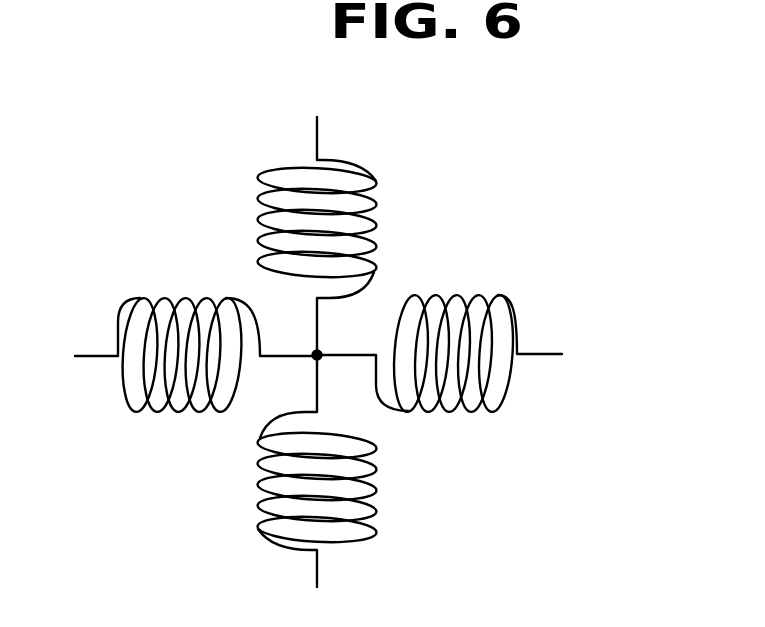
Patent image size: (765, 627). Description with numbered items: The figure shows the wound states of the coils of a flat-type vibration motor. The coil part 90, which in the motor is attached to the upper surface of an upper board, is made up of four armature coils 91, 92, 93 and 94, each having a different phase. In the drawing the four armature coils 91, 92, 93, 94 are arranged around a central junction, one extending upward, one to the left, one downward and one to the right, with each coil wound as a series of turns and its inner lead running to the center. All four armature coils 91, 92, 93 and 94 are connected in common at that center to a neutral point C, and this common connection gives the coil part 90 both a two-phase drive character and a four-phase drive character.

The coil part 90 is at (136, 190).
The armature coil 91 is at (382, 195).
The armature coil 92 is at (160, 412).
The armature coil 93 is at (378, 490).
The armature coil 94 is at (500, 297).
The neutral point C is at (317, 355).